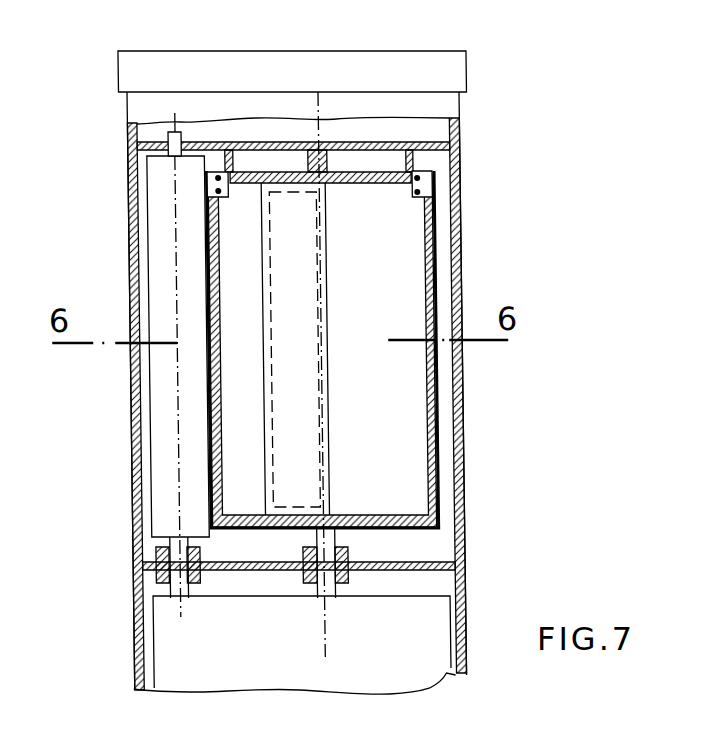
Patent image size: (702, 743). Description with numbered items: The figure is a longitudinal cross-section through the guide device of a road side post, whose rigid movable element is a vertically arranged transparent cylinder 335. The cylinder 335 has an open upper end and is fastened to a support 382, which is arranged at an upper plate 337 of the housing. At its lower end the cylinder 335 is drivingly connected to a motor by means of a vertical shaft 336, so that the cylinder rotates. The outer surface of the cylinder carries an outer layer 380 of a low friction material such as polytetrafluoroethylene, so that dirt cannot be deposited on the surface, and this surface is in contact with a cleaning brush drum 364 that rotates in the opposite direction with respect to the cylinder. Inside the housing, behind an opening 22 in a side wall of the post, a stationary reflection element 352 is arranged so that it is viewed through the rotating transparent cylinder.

The upper plate 337 is at (275, 141).
The cleaning brush drum 364 is at (170, 234).
The support 382 is at (368, 178).
The stationary reflection element 352 is at (330, 256).
The opening 22 is at (266, 325).
The transparent cylinder 335 is at (426, 280).
The outer layer 380 is at (441, 296).
The vertical shaft 336 is at (330, 632).